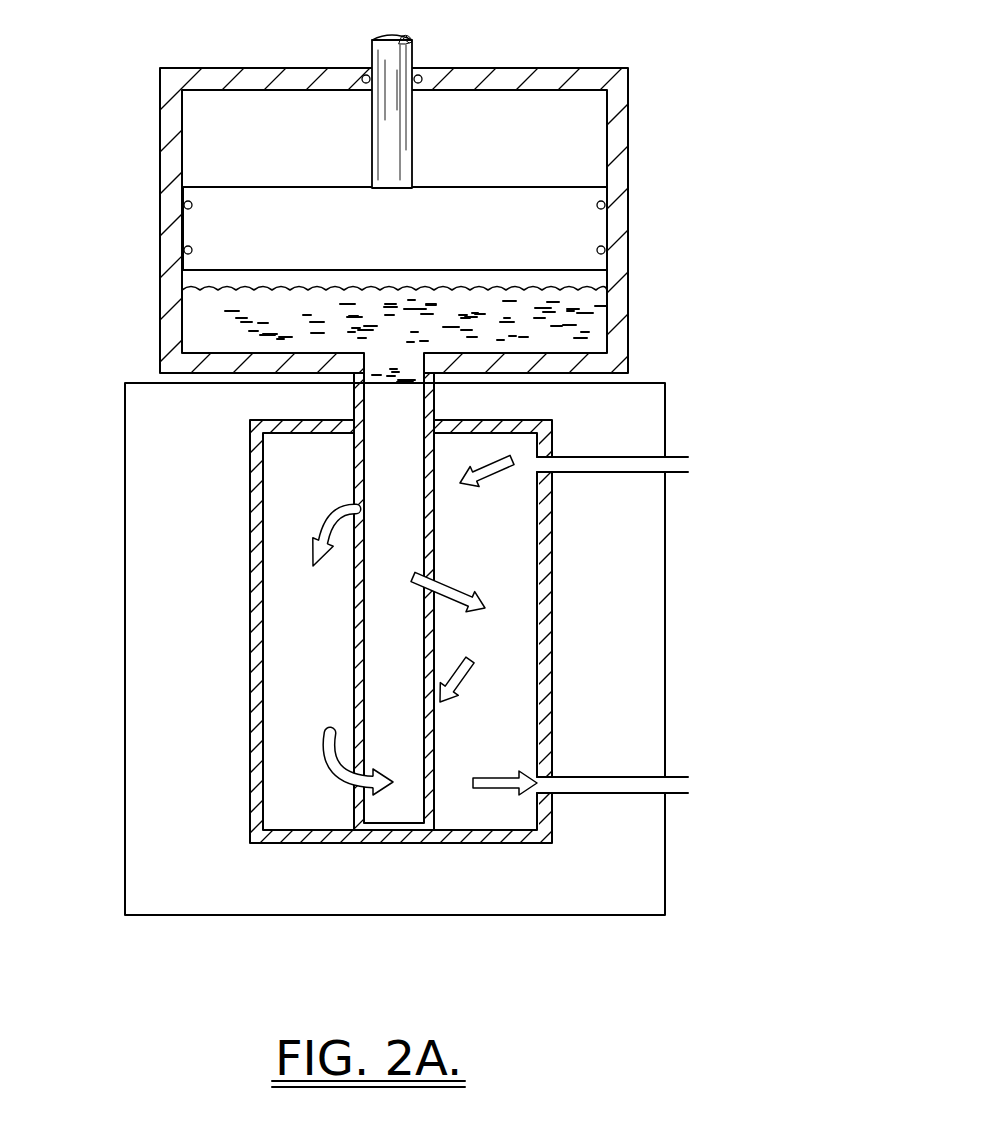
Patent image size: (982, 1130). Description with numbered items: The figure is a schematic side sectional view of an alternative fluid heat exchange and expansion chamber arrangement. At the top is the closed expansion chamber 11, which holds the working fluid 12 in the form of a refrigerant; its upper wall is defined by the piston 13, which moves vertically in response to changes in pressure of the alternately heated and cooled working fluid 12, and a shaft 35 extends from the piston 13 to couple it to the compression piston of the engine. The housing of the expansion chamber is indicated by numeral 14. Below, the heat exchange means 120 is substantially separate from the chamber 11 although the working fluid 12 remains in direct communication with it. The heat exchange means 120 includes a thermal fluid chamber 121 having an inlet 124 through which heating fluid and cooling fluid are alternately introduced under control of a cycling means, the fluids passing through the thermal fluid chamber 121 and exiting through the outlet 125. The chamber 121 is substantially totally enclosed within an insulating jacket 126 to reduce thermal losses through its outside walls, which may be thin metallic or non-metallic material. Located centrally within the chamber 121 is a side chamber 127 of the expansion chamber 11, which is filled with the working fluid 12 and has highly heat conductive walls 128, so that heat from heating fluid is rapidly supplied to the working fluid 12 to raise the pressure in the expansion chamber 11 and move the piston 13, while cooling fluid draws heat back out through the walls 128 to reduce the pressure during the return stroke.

The expansion chamber 11 is at (458, 191).
The working fluid 12 is at (200, 328).
The piston 13 is at (275, 110).
The cylinder housing 14 is at (613, 127).
The shaft 35 is at (413, 50).
The heat exchange means 120 is at (491, 642).
The thermal fluid chamber 121 is at (275, 670).
The inlet 124 is at (688, 457).
The outlet 125 is at (683, 777).
The insulating jacket 126 is at (143, 515).
The side chamber 127 is at (402, 552).
The heat conductive walls 128 is at (433, 740).